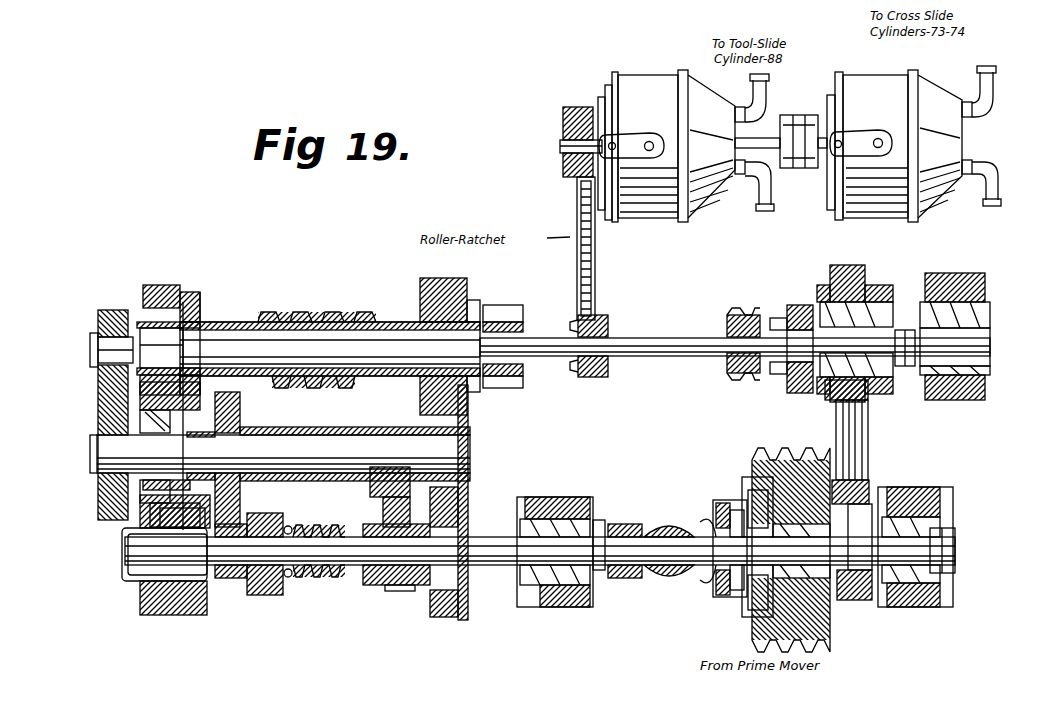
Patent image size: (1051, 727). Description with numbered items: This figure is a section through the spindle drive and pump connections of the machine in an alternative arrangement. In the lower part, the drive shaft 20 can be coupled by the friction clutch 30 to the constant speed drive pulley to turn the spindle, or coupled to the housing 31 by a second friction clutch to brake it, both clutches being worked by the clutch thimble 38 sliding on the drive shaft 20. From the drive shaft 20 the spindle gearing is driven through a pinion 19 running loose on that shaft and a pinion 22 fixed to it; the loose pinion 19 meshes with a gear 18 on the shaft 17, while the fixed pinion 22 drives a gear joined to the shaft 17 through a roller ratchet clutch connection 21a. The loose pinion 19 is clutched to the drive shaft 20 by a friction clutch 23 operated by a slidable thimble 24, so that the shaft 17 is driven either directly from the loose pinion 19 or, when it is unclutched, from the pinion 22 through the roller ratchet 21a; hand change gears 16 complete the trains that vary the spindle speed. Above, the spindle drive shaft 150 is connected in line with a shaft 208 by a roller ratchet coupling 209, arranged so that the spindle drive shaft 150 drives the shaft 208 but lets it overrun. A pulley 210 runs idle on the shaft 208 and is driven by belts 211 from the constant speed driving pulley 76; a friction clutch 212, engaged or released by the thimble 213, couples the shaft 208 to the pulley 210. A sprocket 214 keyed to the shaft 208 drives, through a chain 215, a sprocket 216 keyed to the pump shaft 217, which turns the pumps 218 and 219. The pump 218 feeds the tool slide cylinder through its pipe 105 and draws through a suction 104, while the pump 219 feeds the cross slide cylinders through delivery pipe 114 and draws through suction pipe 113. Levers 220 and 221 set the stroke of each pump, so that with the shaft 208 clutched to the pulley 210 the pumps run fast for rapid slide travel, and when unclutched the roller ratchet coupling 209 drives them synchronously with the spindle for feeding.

The hand change gears 16 is at (97, 408).
The shaft 17 is at (300, 435).
The gear 18 is at (240, 415).
The pinion 19 is at (232, 592).
The drive shaft 20 is at (484, 536).
The roller ratchet clutch connection 21a is at (468, 443).
The pinion 22 is at (398, 590).
The friction clutch 23 is at (282, 537).
The slidable thimble 24 is at (318, 580).
The friction clutch 30 is at (713, 520).
The housing 31 is at (570, 604).
The clutch thimble 38 is at (684, 580).
The constant speed driving pulley 76 is at (870, 490).
The suction 104 is at (768, 212).
The pipe 105 is at (752, 78).
The suction pipe 113 is at (980, 200).
The delivery pipe 114 is at (980, 68).
The spindle drive shaft 150 is at (229, 337).
The shaft 208 is at (646, 338).
The roller ratchet coupling 209 is at (503, 303).
The pulley 210 is at (863, 289).
The belts 211 is at (860, 436).
The friction clutch 212 is at (805, 380).
The thimble 213 is at (727, 365).
The sprocket 214 is at (598, 322).
The chain 215 is at (583, 216).
The sprocket 216 is at (563, 165).
The pump shaft 217 is at (562, 142).
The pump 218 is at (650, 80).
The pump 219 is at (878, 84).
The lever 220 is at (633, 134).
The lever 221 is at (863, 132).